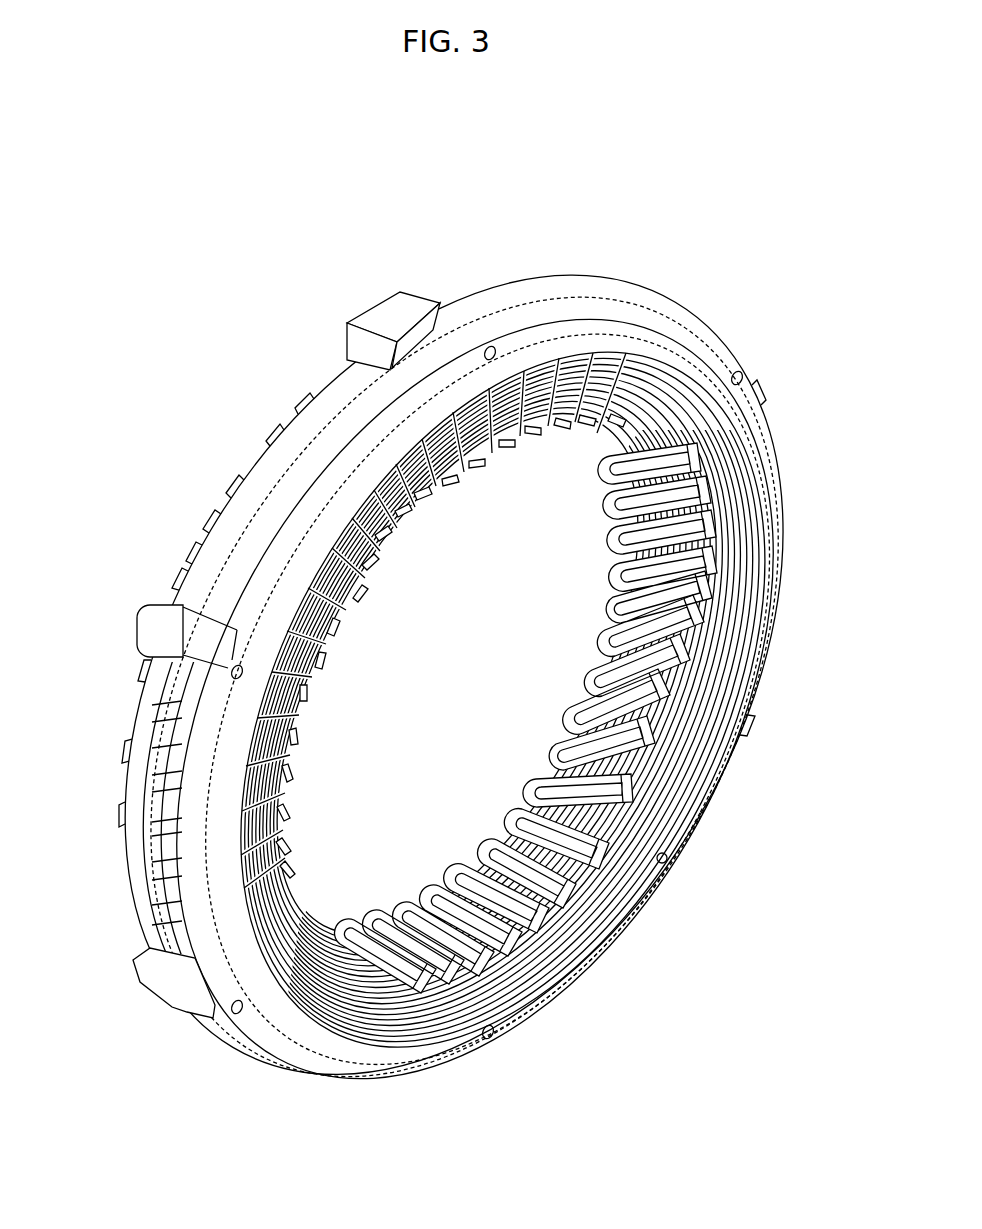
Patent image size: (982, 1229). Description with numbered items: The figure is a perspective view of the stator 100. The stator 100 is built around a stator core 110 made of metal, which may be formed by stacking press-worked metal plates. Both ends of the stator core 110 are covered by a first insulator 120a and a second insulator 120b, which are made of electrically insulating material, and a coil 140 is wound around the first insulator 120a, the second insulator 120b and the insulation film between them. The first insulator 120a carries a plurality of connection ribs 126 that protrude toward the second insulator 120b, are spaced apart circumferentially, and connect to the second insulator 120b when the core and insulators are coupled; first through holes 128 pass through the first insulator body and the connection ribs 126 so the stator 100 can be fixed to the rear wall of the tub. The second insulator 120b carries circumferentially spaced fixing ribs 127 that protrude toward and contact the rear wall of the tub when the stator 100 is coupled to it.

The stator 100 is at (442, 194).
The stator core 110 is at (680, 578).
The first insulator 120a is at (672, 335).
The second insulator 120b is at (493, 290).
The connection rib 126 is at (190, 993).
The fixing rib 127 is at (395, 315).
The first through hole 128 is at (750, 379).
The coil 140 is at (735, 455).